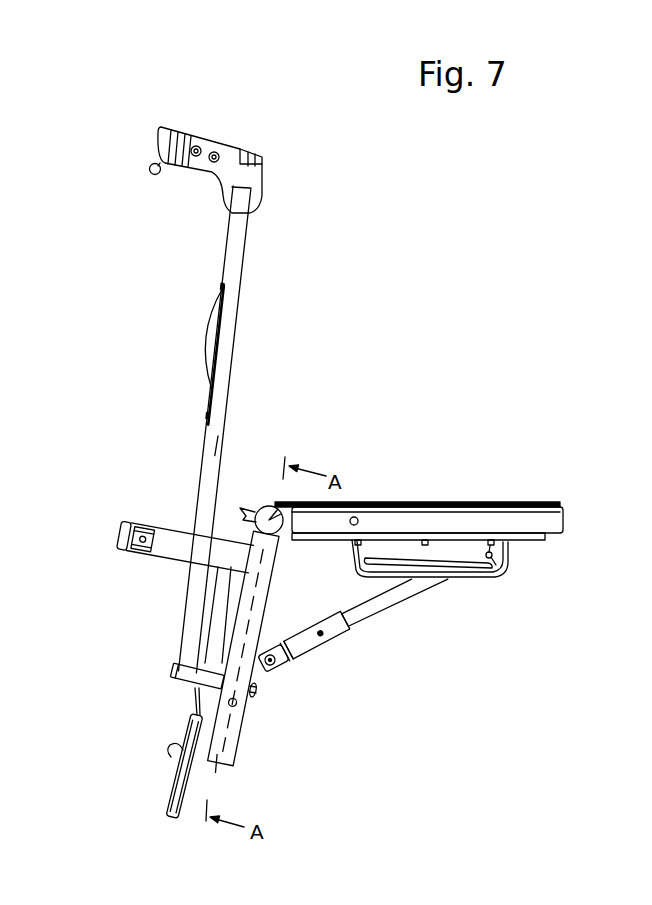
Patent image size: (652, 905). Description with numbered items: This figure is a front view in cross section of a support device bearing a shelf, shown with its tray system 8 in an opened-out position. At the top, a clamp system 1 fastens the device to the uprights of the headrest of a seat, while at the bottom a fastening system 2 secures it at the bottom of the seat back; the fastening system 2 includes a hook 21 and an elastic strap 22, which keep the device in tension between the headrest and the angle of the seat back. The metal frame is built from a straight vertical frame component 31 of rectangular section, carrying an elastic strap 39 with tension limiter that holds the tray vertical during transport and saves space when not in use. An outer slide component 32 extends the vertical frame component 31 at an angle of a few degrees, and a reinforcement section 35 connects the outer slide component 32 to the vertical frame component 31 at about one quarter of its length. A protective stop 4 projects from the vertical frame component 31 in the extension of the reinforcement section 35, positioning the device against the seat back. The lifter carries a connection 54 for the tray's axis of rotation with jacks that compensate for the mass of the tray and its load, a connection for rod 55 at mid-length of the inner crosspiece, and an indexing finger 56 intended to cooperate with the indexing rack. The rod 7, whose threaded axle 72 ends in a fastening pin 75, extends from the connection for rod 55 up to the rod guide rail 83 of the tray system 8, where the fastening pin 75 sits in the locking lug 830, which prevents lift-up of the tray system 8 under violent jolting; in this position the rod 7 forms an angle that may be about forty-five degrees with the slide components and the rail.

The clamp system 1 is at (204, 108).
The fastening system 2 is at (146, 704).
The protective stop 4 is at (128, 521).
The rod 7 is at (351, 659).
The tray system 8 is at (450, 504).
The hook 21 is at (168, 752).
The elastic strap 22 is at (208, 606).
The vertical frame component 31 is at (236, 270).
The outer slide component 32 is at (272, 576).
The reinforcement section 35 is at (222, 556).
The strap 39 is at (199, 340).
The connection 54 is at (264, 506).
The connection for rod 55 is at (275, 657).
The indexing finger 56 is at (281, 720).
The threaded axle 72 is at (366, 610).
The fastening pin 75 is at (500, 551).
The rod guide rail 83 is at (472, 580).
The locking lug 830 is at (505, 574).